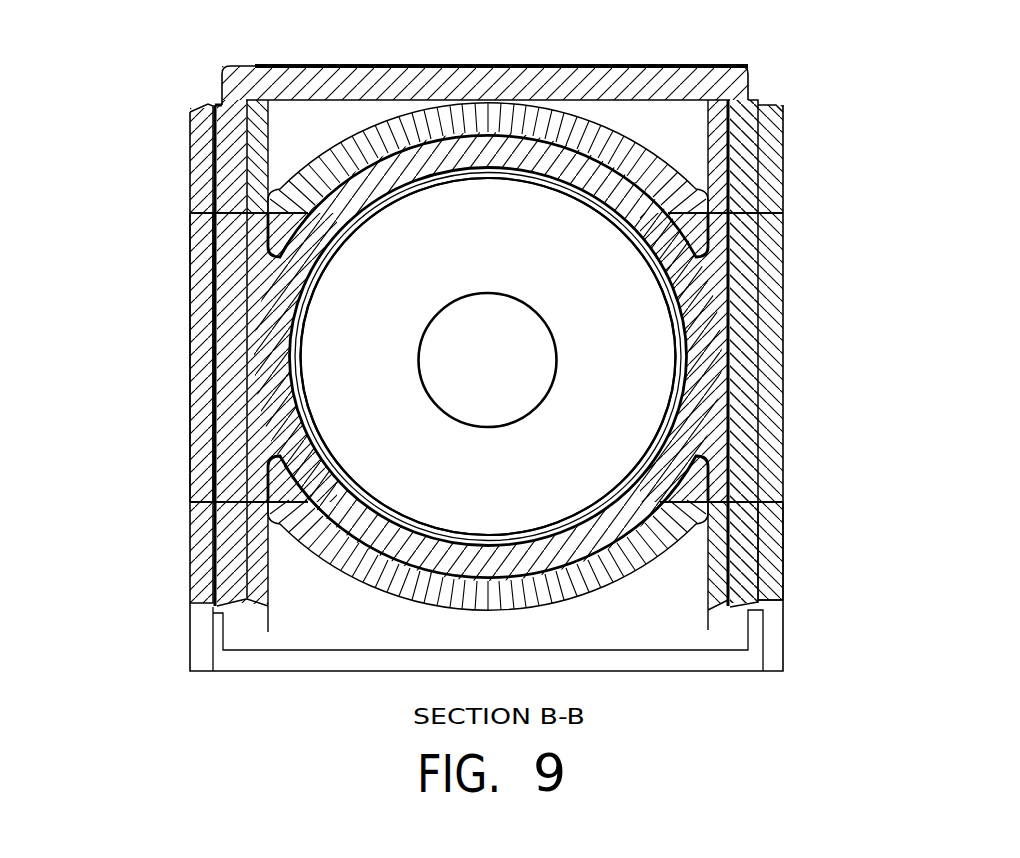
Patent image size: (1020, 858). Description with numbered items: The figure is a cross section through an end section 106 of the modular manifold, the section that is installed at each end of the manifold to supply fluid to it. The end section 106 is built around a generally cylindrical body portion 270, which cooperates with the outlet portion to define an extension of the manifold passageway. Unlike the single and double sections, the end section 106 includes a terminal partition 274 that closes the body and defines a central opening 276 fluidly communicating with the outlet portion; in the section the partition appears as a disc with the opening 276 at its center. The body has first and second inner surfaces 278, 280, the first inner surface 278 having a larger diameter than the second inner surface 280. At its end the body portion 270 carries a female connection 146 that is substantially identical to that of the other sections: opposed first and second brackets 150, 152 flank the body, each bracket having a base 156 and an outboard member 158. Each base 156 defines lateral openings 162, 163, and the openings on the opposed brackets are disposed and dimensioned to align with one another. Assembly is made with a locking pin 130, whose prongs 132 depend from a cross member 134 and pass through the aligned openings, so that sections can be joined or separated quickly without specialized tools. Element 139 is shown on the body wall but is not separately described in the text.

The end section 106 is at (788, 642).
The locking pin 130 is at (698, 335).
The prong 132 is at (154, 357).
The cross member 134 is at (605, 356).
The valve housing 139 is at (190, 363).
The female connection 146 is at (215, 105).
The first bracket 150 is at (790, 168).
The second bracket 152 is at (790, 551).
The base 156 is at (790, 201).
The outboard member 158 is at (744, 64).
The lateral opening 162 is at (205, 184).
The lateral opening 163 is at (788, 146).
The body portion 270 is at (787, 247).
The terminal partition 274 is at (666, 382).
The opening 276 is at (556, 346).
The first inner surface 278 is at (700, 400).
The second inner surface 280 is at (691, 382).